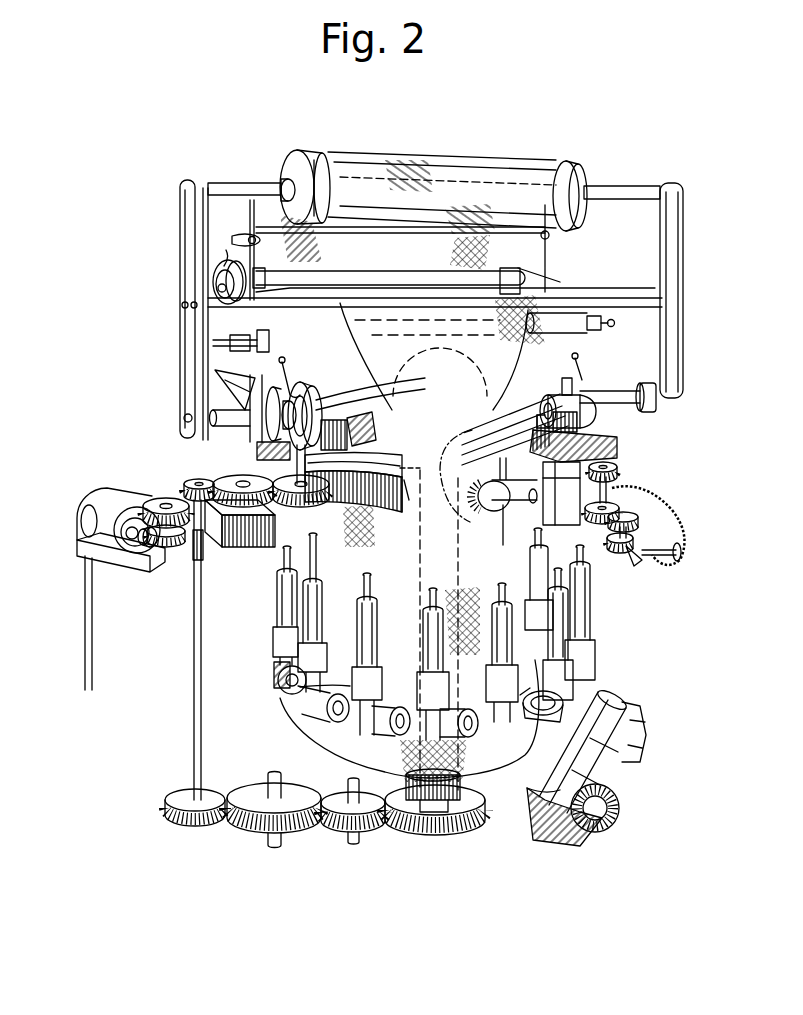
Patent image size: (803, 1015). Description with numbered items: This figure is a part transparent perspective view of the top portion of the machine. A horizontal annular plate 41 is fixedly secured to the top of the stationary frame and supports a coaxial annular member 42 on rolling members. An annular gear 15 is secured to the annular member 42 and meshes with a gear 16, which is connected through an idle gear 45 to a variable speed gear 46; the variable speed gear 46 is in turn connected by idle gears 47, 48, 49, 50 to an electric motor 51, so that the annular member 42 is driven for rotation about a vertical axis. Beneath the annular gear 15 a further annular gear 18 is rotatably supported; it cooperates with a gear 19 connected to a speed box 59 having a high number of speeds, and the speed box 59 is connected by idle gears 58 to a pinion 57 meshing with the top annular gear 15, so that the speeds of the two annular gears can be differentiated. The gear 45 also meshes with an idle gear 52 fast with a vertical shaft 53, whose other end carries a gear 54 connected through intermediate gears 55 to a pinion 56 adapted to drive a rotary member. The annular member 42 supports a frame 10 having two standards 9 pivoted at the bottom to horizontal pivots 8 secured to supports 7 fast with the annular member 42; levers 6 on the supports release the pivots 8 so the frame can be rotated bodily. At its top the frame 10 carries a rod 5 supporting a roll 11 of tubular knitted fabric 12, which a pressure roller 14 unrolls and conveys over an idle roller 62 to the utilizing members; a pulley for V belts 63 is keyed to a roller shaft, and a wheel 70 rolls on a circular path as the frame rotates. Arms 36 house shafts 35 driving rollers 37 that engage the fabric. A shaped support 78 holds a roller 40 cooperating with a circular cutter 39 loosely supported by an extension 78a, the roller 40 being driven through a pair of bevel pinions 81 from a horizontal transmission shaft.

The rod 5 is at (600, 196).
The levers 6 is at (300, 388).
The supports 7 is at (320, 400).
The horizontal pivots 8 is at (240, 427).
The standards 9 is at (192, 345).
The frame 10 is at (160, 266).
The roll 11 is at (455, 172).
The tubular knitted fabric 12 is at (500, 366).
The pressure roller 14 is at (500, 281).
The annular gear 15 is at (400, 478).
The gear 16 is at (300, 498).
The annular gear 18 is at (408, 518).
The gear 19 is at (436, 610).
The shafts 35 is at (365, 588).
The arms 36 is at (379, 642).
The rollers 37 is at (386, 707).
The circular cutter 39 is at (575, 705).
The roller 40 is at (620, 716).
The annular plate 41 is at (400, 470).
The annular member 42 is at (400, 455).
The idle gear 45 is at (235, 482).
The variable speed gear 46 is at (250, 543).
The idle gear 47 is at (193, 562).
The idle gear 48 is at (160, 500).
The idle gear 49 is at (178, 545).
The idle gear 50 is at (156, 548).
The electric motor 51 is at (108, 490).
The idle gear 52 is at (198, 481).
The vertical shaft 53 is at (204, 652).
The gear 54 is at (200, 830).
The intermediate gears 55 is at (345, 835).
The pinion 56 is at (460, 832).
The pinion 57 is at (617, 455).
The idle gears 58 is at (668, 510).
The speed box 59 is at (615, 538).
The idle roller 62 is at (553, 326).
The pulley for V belts 63 is at (240, 241).
The wheel 70 is at (298, 392).
The shaped support 78 is at (570, 800).
The extension 78a is at (545, 700).
The pair of bevel pinions 81 is at (605, 840).